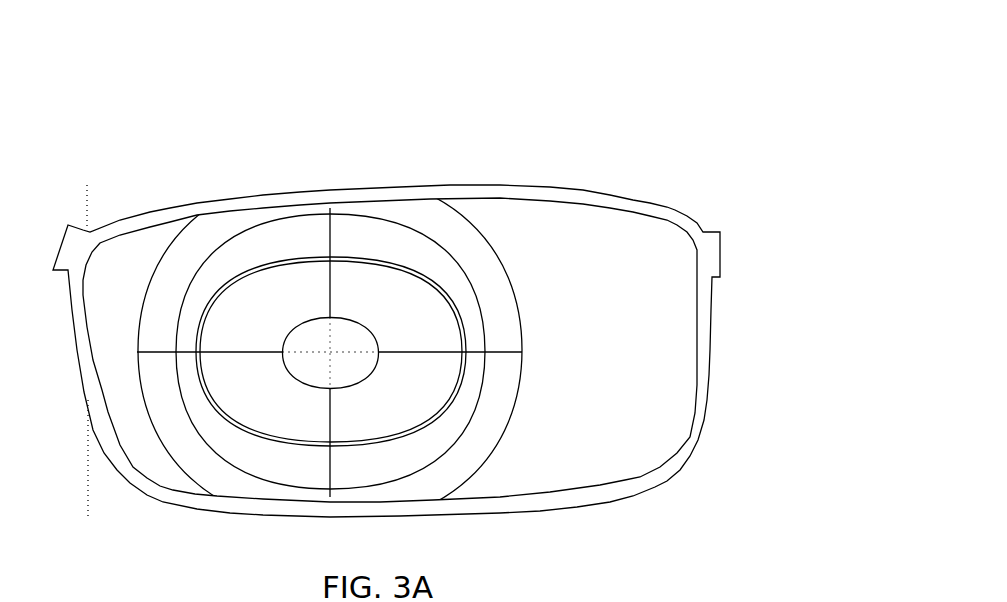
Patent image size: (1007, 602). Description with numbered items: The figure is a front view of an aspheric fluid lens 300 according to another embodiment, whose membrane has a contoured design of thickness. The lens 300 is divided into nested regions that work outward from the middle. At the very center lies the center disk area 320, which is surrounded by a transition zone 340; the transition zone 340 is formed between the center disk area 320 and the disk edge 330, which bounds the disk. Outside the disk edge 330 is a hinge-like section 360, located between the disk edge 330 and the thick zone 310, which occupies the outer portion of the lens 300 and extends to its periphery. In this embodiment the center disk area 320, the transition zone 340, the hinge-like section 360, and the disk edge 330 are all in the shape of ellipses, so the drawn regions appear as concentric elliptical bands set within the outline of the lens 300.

The aspheric fluid lens 300 is at (728, 466).
The thick zone 310 is at (589, 260).
The center disk area 320 is at (299, 302).
The disk edge 330 is at (379, 248).
The transition zone 340 is at (239, 314).
The hinge-like section 360 is at (182, 302).